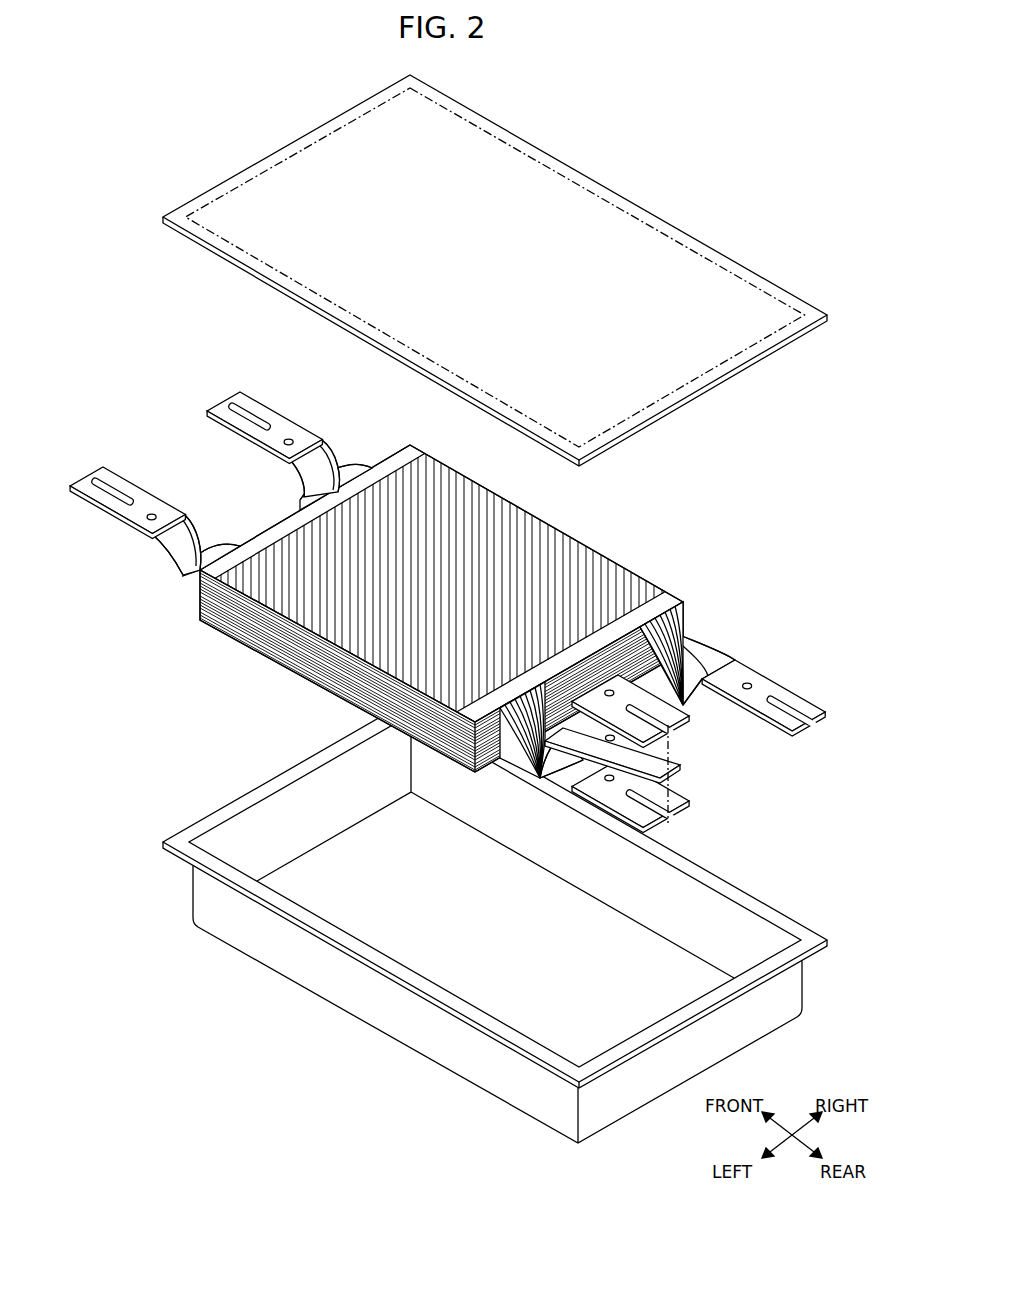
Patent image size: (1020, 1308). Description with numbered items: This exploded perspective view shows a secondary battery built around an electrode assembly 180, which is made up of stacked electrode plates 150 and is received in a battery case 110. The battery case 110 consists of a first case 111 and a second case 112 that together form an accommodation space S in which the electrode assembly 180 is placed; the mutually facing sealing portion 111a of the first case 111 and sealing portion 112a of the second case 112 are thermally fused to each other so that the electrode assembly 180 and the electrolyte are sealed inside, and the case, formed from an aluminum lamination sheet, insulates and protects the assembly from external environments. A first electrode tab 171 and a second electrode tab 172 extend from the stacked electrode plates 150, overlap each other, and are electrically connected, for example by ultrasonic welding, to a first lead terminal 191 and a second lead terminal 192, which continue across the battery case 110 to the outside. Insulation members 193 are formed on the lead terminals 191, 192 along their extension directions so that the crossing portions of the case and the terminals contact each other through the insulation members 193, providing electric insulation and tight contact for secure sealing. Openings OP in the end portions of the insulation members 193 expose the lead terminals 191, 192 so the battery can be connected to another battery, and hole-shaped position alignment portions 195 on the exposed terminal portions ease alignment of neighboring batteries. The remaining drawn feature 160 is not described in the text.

The battery case 110 is at (473, 921).
The first case 111 is at (495, 270).
The sealing portion of the first case 111a is at (651, 222).
The second case 112 is at (287, 962).
The sealing portion of the second case 112a is at (470, 1009).
The accommodation space S is at (450, 918).
The stacked electrode plates 150 is at (426, 456).
The first electrode tab 160 is at (200, 588).
The first electrode tab 171 is at (693, 655).
The second electrode tab 172 is at (543, 733).
The electrode assembly 180 is at (557, 493).
The first lead terminal 191 is at (320, 450).
The second lead terminal 192 is at (183, 522).
The insulation member 193 is at (447, 597).
The position alignment portion 195 is at (748, 676).
The opening OP is at (96, 477).